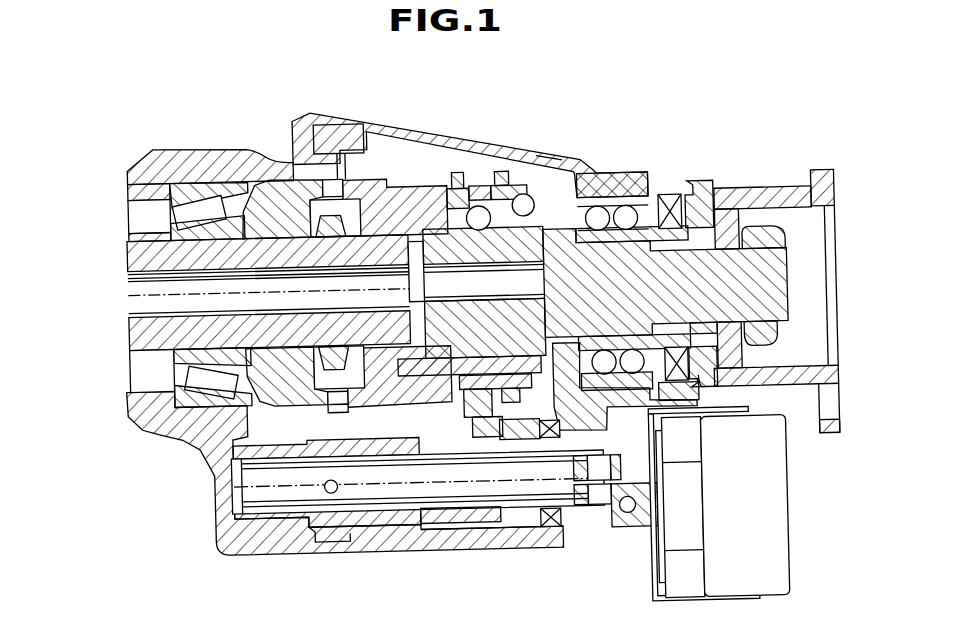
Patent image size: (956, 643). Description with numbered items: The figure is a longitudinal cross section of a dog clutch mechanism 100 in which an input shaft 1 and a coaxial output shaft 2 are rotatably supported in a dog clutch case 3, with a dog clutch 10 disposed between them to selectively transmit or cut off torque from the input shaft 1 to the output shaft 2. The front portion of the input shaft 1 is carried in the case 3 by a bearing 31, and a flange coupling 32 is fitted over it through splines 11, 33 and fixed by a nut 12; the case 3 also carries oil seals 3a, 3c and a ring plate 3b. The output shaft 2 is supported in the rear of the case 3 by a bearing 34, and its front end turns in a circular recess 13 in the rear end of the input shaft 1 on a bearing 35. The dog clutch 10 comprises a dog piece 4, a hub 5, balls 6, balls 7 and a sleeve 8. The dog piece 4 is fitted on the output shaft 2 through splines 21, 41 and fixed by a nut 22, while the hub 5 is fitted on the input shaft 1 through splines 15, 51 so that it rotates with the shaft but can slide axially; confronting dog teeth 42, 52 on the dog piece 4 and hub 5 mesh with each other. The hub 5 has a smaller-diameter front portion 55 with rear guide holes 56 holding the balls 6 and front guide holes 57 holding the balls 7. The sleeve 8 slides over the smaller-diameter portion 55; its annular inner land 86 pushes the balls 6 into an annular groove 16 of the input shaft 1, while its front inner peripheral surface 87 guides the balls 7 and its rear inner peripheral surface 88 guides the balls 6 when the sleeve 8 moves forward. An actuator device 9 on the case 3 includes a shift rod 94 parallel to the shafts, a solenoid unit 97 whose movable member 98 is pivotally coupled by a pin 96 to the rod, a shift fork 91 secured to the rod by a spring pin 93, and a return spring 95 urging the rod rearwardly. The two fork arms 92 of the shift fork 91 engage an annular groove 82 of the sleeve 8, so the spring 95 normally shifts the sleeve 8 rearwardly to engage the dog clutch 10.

The input shaft 1 is at (785, 280).
The output shaft 2 is at (140, 380).
The dog clutch case 3 is at (432, 130).
The oil seal 3a is at (680, 196).
The ring plate 3b is at (700, 184).
The oil seal 3c is at (575, 510).
The dog piece 4 is at (275, 205).
The hub 5 is at (416, 200).
The balls 6 is at (470, 266).
The balls 7 is at (540, 205).
The sleeve 8 is at (505, 172).
The actuator device 9 is at (606, 545).
The dog clutch 10 is at (394, 150).
The splines 11 is at (745, 392).
The nut 12 is at (772, 346).
The circular recess 13 is at (352, 440).
The splines 15 is at (420, 376).
The annular groove 16 is at (480, 345).
The splines 21 is at (262, 380).
The nut 22 is at (332, 236).
The bearing 31 is at (628, 176).
The flange coupling 32 is at (764, 194).
The splines 33 is at (770, 236).
The bearing 34 is at (216, 160).
The bearing 35 is at (410, 280).
The splines 41 is at (270, 270).
The dog teeth 42 is at (338, 120).
The splines 51 is at (445, 272).
The dog teeth 52 is at (334, 410).
The smaller-diameter front portion 55 is at (532, 382).
The guide holes 56 is at (488, 185).
The guide holes 57 is at (520, 230).
The annular groove 82 is at (474, 506).
The annular inner land 86 is at (504, 404).
The front inner peripheral surface 87 is at (548, 152).
The rear inner peripheral surface 88 is at (462, 170).
The shift fork 91 is at (376, 550).
The fork arms 92 is at (436, 458).
The spring pin 93 is at (328, 548).
The shift rod 94 is at (540, 530).
The return spring 95 is at (436, 548).
The pin 96 is at (628, 448).
The solenoid unit 97 is at (775, 511).
The movable member 98 is at (583, 510).
The dog clutch mechanism 100 is at (186, 462).